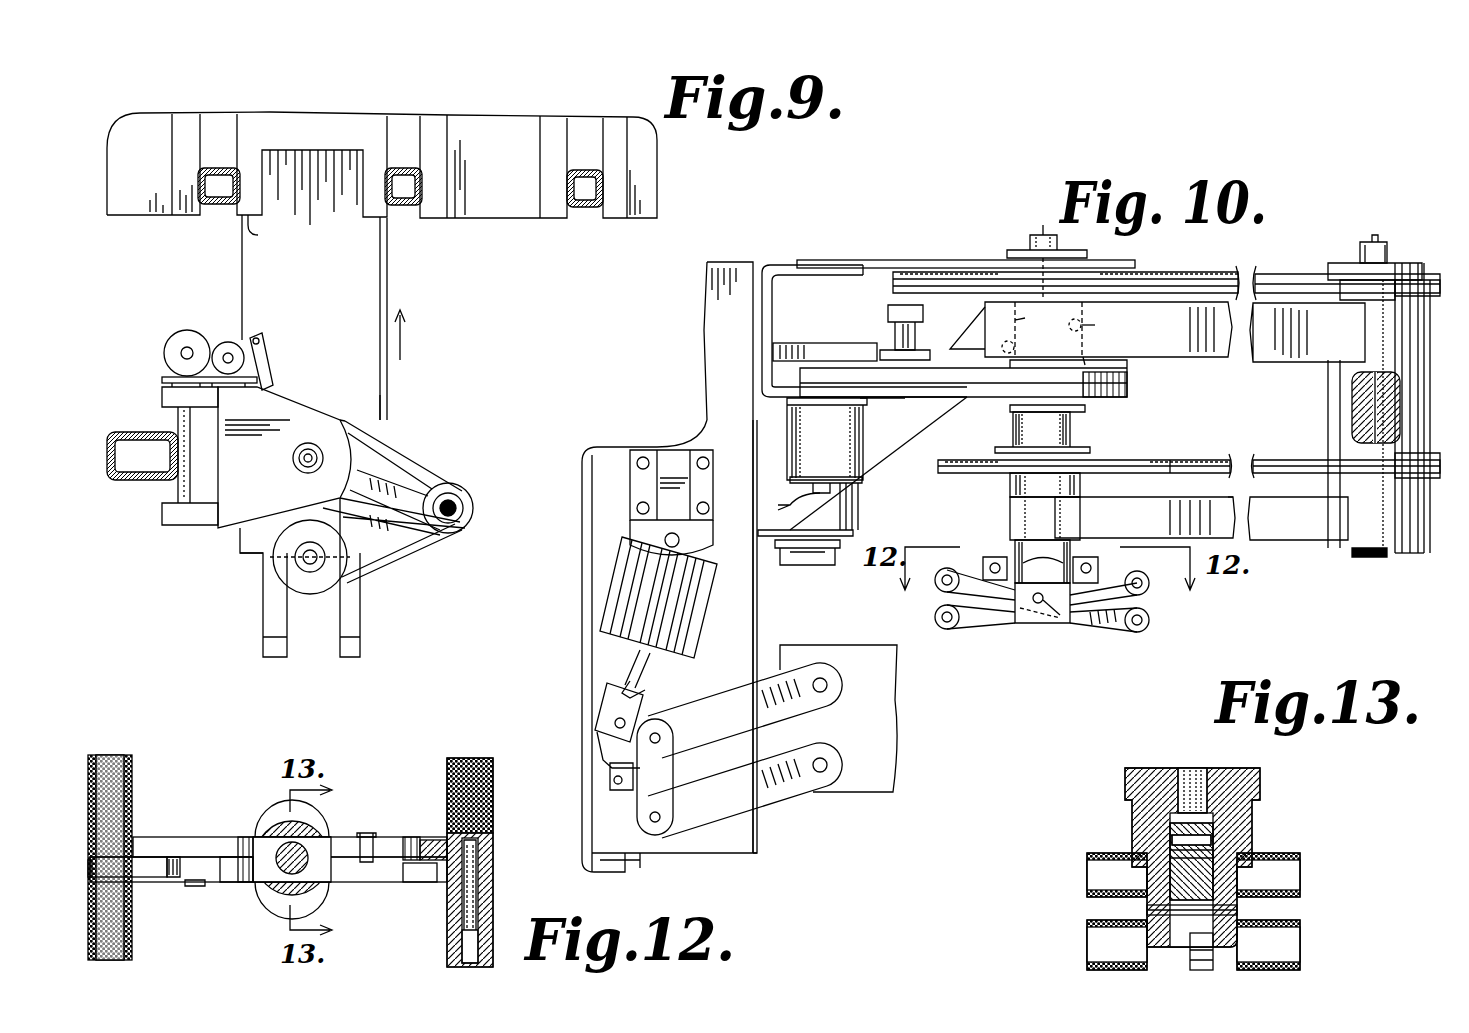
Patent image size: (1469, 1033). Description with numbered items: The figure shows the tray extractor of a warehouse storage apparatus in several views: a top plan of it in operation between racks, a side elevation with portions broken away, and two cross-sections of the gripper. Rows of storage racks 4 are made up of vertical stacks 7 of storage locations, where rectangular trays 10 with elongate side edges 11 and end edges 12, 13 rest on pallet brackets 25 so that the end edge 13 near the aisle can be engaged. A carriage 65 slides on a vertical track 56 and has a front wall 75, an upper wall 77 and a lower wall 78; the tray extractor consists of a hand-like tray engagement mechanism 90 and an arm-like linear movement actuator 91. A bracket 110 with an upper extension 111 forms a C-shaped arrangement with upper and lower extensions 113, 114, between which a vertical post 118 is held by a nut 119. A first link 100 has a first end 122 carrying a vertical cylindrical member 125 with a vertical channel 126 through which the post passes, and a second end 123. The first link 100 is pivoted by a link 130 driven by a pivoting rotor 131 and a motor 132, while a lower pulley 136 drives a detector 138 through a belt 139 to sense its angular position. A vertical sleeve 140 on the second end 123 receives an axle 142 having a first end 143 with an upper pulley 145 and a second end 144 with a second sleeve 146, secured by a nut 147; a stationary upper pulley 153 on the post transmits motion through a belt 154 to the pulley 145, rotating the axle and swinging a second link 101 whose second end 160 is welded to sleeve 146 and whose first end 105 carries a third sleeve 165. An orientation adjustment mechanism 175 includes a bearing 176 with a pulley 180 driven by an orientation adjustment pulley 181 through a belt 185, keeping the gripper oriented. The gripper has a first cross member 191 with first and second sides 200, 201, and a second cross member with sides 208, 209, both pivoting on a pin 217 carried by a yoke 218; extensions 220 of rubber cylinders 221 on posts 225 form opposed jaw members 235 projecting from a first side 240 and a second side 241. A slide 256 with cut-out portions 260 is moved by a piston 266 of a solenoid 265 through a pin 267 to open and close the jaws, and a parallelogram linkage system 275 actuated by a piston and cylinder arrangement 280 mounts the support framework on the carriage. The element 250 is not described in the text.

In FIG. 9, the row of storage racks 4 is at (418, 170).
In FIG. 9, the vertical stack 7 is at (512, 218).
In FIG. 9, the tray 10 is at (388, 280).
In FIG. 9, the side edge 11 is at (240, 277).
In FIG. 9, the end edge 12 is at (330, 148).
In FIG. 9, the end edge 13 is at (245, 553).
In FIG. 9, the pallet bracket 25 is at (267, 230).
In FIG. 9, the vertical track 56 is at (128, 480).
In FIG. 10, the vertical track 56 is at (580, 648).
In FIG. 9, the carriage 65 is at (170, 525).
In FIG. 10, the carriage 65 is at (718, 856).
In FIG. 10, the front wall 75 is at (762, 620).
In FIG. 10, the upper wall 77 is at (752, 262).
In FIG. 10, the lower wall 78 is at (680, 853).
In FIG. 10, the tray engagement mechanism 90 is at (1045, 625).
In FIG. 10, the linear movement actuator 91 is at (1420, 370).
In FIG. 9, the first link 100 is at (408, 480).
In FIG. 10, the first link 100 is at (1186, 358).
In FIG. 9, the second link 101 is at (430, 540).
In FIG. 10, the second link 101 is at (1213, 505).
In FIG. 10, the first end of second link 105 is at (1065, 520).
In FIG. 10, the bracket 110 is at (772, 265).
In FIG. 10, the upper extension 111 is at (855, 262).
In FIG. 9, the upper extension 113 is at (270, 395).
In FIG. 10, the upper extension 113 is at (915, 262).
In FIG. 10, the lower extension 114 is at (902, 402).
In FIG. 9, the vertical post 118 is at (292, 462).
In FIG. 10, the vertical post 118 is at (1040, 232).
In FIG. 10, the nut 119 is at (1060, 243).
In FIG. 10, the first end of first link 122 is at (1033, 321).
In FIG. 10, the second end of first link 123 is at (1365, 330).
In FIG. 10, the vertical cylindrical member 125 is at (1096, 362).
In FIG. 10, the vertical channel 126 is at (1110, 323).
In FIG. 9, the link 130 is at (262, 360).
In FIG. 9, the pivoting rotor 131 is at (224, 342).
In FIG. 10, the pivoting rotor 131 is at (855, 515).
In FIG. 9, the motor 132 is at (164, 354).
In FIG. 10, the lower pulley 136 is at (1008, 398).
In FIG. 10, the detector 138 is at (860, 436).
In FIG. 10, the belt 139 is at (872, 345).
In FIG. 10, the vertical sleeve 140 is at (1328, 413).
In FIG. 10, the axle 142 is at (1362, 245).
In FIG. 10, the axle first end 143 is at (1378, 235).
In FIG. 10, the axle second end 144 is at (1362, 560).
In FIG. 9, the upper pulley 145 is at (466, 496).
In FIG. 10, the upper pulley 145 is at (1422, 280).
In FIG. 10, the second sleeve 146 is at (1428, 548).
In FIG. 10, the nut 147 is at (1390, 250).
In FIG. 9, the upper pulley 153 is at (345, 428).
In FIG. 10, the upper pulley 153 is at (1260, 265).
In FIG. 9, the belt 154 is at (395, 448).
In FIG. 10, the belt 154 is at (1283, 274).
In FIG. 10, the second end of second link 160 is at (1328, 520).
In FIG. 10, the third sleeve 165 is at (1015, 510).
In FIG. 9, the orientation adjustment mechanism 175 is at (385, 575).
In FIG. 10, the orientation adjustment mechanism 175 is at (1165, 458).
In FIG. 10, the bearing 176 is at (1008, 480).
In FIG. 9, the pulley 180 is at (288, 580).
In FIG. 10, the pulley 180 is at (1100, 458).
In FIG. 10, the orientation adjustment pulley 181 is at (1420, 455).
In FIG. 10, the belt 185 is at (1203, 458).
In FIG. 12, the first cross member 191 is at (80, 870).
In FIG. 12, the first side 200 is at (150, 882).
In FIG. 12, the second side 201 is at (145, 840).
In FIG. 12, the first side 208 is at (415, 830).
In FIG. 12, the second side 209 is at (430, 885).
In FIG. 10, the pin 217 is at (1072, 625).
In FIG. 13, the pin 217 is at (1240, 910).
In FIG. 10, the yoke 218 is at (1015, 625).
In FIG. 12, the yoke 218 is at (320, 892).
In FIG. 13, the yoke 218 is at (1130, 812).
In FIG. 12, the extension 220 is at (128, 760).
In FIG. 12, the rubber cylinder 221 is at (493, 910).
In FIG. 12, the post 225 is at (493, 890).
In FIG. 10, the jaw member 235 is at (1150, 612).
In FIG. 13, the jaw member 235 is at (1085, 920).
In FIG. 12, the first side of scissors mechanism 240 is at (237, 882).
In FIG. 12, the second side of scissors mechanism 241 is at (233, 838).
In FIG. 10, the flange 250 is at (1072, 416).
In FIG. 13, the slide 256 is at (1215, 870).
In FIG. 12, the cut-out portion 260 is at (368, 833).
In FIG. 10, the solenoid 265 is at (1010, 440).
In FIG. 12, the piston 266 is at (300, 840).
In FIG. 13, the piston 266 is at (1192, 773).
In FIG. 13, the pin 267 is at (1175, 845).
In FIG. 10, the parallelogram linkage system 275 is at (730, 690).
In FIG. 10, the piston and cylinder arrangement 280 is at (695, 636).